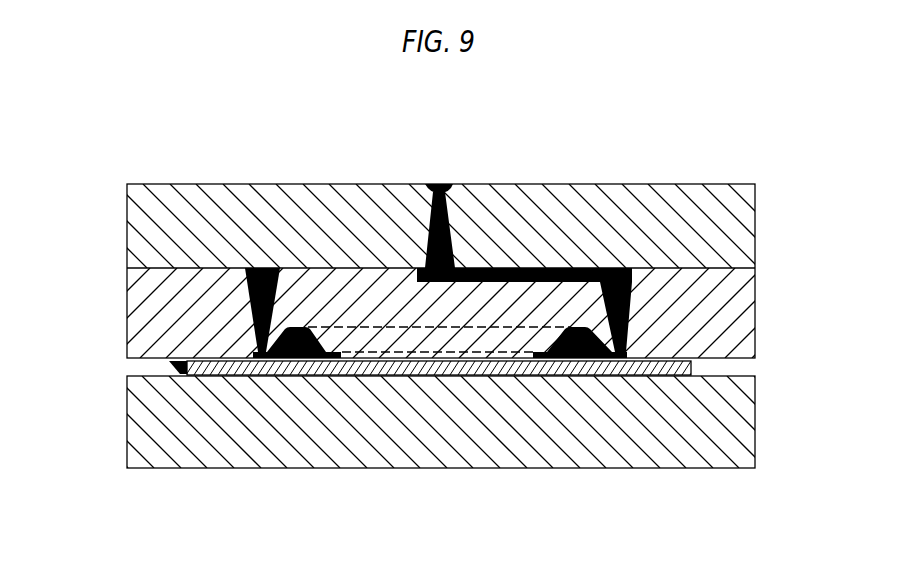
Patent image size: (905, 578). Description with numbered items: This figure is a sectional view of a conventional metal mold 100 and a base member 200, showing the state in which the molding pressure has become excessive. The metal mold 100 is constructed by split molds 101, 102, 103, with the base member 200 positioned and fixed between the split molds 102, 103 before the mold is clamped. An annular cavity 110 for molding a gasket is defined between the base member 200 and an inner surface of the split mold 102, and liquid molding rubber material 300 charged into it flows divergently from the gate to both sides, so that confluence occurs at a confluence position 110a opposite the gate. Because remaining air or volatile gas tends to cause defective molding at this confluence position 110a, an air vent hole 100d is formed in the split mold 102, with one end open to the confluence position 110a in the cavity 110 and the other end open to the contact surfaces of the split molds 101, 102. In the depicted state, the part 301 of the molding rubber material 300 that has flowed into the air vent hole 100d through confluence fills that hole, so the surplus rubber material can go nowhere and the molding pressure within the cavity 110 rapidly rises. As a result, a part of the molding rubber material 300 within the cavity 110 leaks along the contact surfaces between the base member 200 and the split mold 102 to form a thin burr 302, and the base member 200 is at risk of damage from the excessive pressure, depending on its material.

The metal mold 100 is at (680, 175).
The air vent hole 100d is at (260, 267).
The split mold 101 is at (513, 217).
The split mold 102 is at (727, 313).
The split mold 103 is at (650, 448).
The annular cavity 110 is at (582, 320).
The confluence position 110a is at (300, 326).
The base member 200 is at (443, 385).
The molding rubber material 300 is at (437, 178).
The part of the molding rubber material 301 is at (242, 312).
The thin burr 302 is at (168, 366).